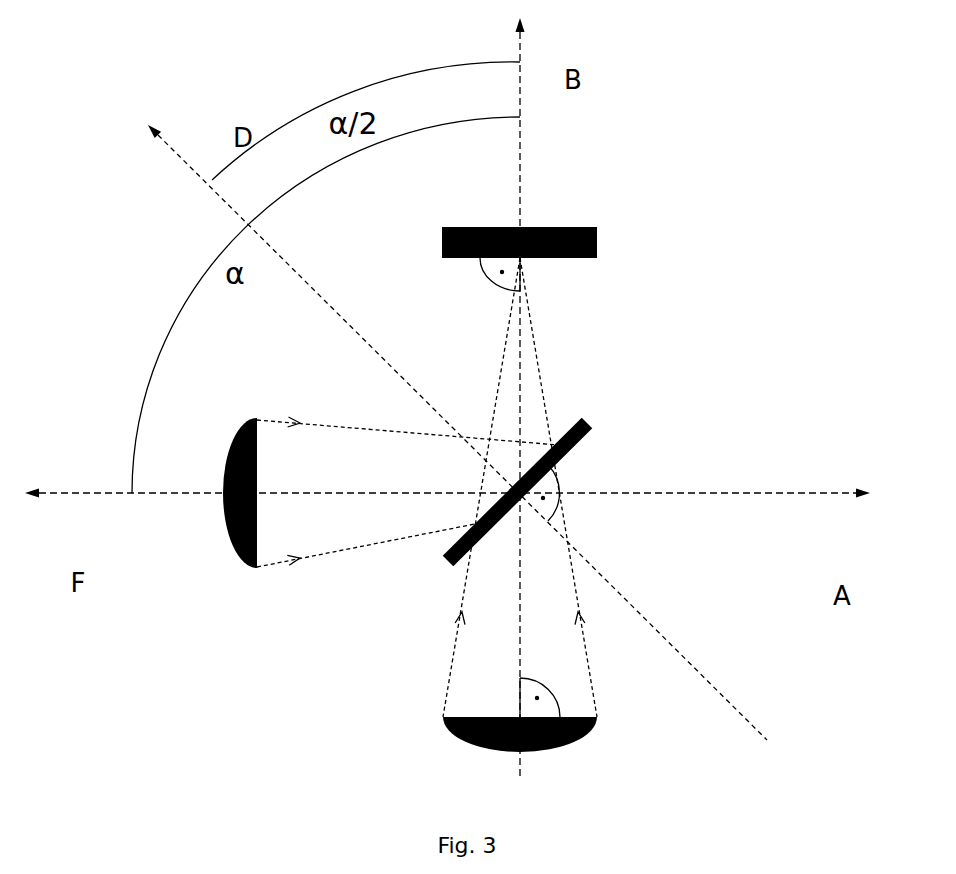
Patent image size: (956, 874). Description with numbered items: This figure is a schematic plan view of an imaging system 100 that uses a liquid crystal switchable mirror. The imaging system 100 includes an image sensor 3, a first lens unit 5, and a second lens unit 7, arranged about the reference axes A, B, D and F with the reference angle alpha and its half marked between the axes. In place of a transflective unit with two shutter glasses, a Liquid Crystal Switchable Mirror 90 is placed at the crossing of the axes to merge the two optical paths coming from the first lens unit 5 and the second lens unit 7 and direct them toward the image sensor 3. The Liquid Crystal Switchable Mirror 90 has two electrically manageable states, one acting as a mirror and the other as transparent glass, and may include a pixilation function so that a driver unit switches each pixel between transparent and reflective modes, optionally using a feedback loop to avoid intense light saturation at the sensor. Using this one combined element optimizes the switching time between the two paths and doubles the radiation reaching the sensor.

The image sensor 3 is at (606, 220).
The first lens unit 5 is at (608, 711).
The second lens unit 7 is at (272, 439).
The Liquid Crystal Switchable Mirror 90 is at (609, 408).
The imaging system 100 is at (772, 230).